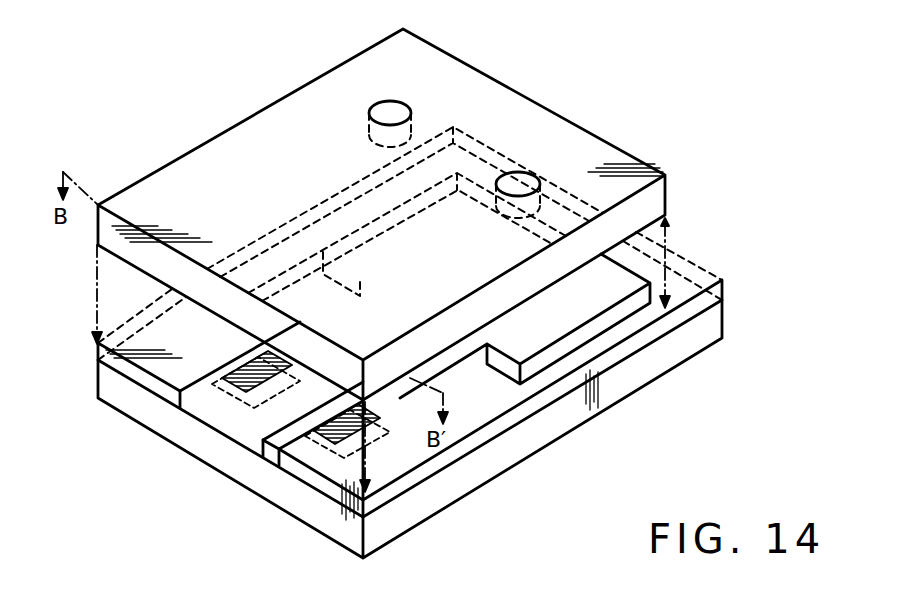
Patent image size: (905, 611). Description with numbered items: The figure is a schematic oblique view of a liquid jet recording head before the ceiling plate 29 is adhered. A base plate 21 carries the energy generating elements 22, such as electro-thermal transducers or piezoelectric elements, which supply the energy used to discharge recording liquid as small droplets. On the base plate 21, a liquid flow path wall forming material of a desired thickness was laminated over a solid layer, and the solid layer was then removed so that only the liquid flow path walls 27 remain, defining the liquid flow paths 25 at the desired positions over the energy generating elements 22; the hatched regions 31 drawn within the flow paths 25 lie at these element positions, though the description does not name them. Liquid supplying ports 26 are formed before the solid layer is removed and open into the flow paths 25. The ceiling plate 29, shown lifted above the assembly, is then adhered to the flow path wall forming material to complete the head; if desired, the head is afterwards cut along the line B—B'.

The base plate 21 is at (206, 449).
The energy generating element 22 is at (182, 410).
The liquid flow path 25 is at (242, 360).
The liquid supplying port 26 is at (394, 110).
The liquid flow path wall 27 is at (134, 374).
The ceiling plate 29 is at (244, 134).
The electrode 31 is at (212, 398).